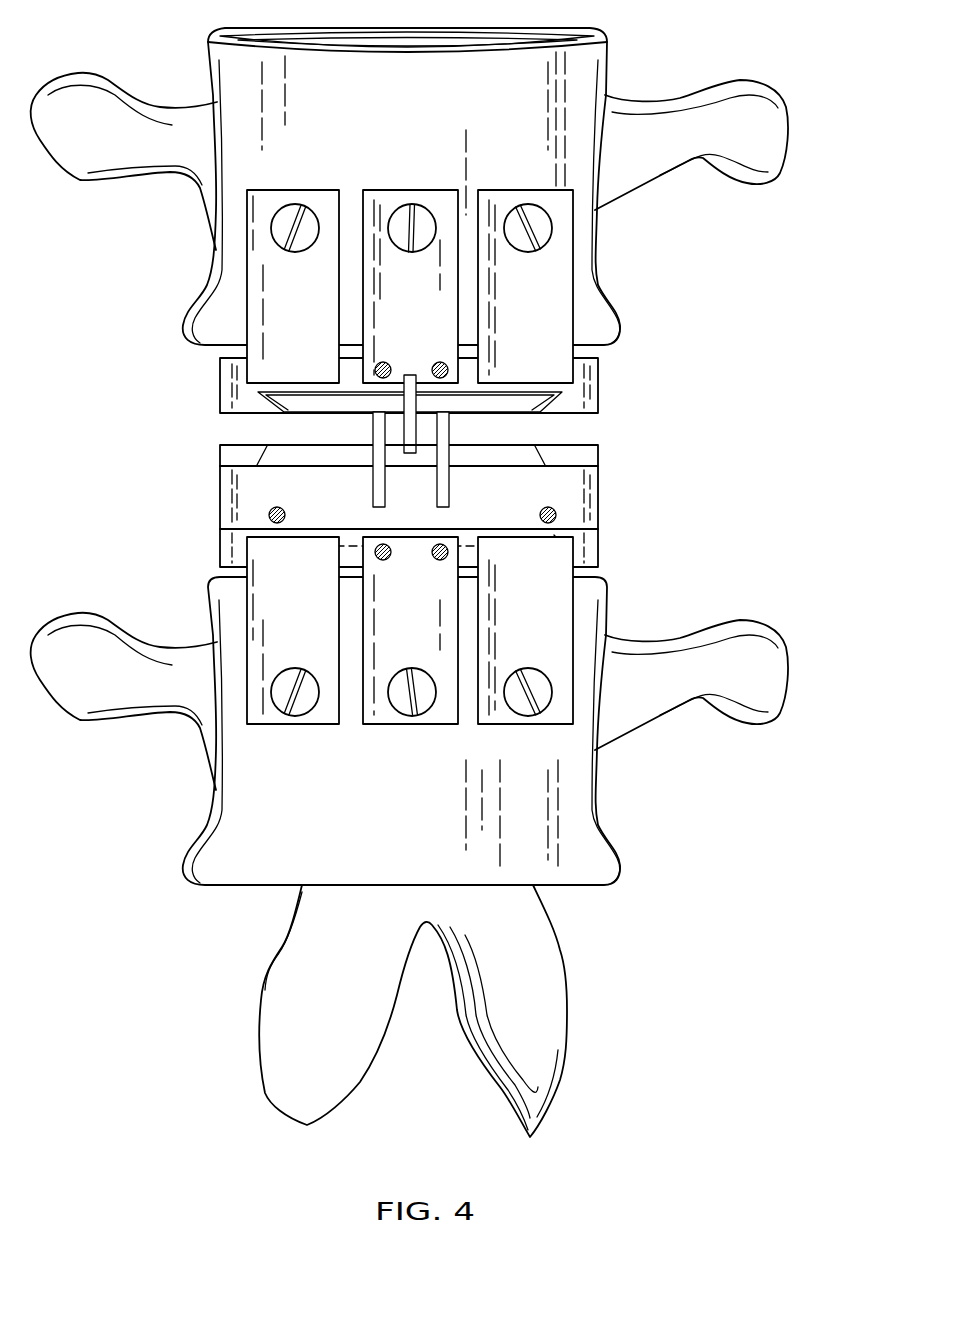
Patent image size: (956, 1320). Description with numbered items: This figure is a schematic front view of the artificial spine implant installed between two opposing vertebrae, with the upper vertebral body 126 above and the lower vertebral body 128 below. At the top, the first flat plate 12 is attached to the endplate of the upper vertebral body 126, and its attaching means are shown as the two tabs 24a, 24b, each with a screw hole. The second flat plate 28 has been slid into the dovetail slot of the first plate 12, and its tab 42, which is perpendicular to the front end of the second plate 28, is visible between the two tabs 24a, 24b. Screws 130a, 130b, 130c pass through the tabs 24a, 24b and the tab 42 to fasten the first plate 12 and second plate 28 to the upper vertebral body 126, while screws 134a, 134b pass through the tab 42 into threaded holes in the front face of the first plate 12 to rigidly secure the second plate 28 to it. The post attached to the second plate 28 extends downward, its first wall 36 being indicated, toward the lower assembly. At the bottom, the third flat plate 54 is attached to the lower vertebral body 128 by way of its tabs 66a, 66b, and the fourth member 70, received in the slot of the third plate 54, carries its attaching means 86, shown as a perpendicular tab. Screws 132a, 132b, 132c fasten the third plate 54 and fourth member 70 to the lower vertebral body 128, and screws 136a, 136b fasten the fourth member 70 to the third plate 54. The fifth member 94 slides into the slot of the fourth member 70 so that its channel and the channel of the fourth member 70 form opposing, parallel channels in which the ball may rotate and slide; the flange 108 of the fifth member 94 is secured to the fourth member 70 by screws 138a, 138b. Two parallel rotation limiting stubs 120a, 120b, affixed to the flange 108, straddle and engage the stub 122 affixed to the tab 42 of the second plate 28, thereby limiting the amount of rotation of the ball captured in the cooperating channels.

The first flat plate 12 is at (369, 390).
The tab 24a is at (555, 310).
The tab 24b is at (317, 310).
The second flat plate 28 is at (318, 398).
The first wall 36 is at (399, 472).
The tab 42 is at (427, 312).
The third flat plate 54 is at (217, 550).
The tab 66a is at (555, 608).
The tab 66b is at (317, 608).
The fourth member 70 is at (384, 459).
The means for attaching fourth member 86 is at (422, 659).
The fifth member 94 is at (515, 460).
The flange 108 is at (588, 485).
The rotation limiting stub 120a is at (478, 500).
The rotation limiting stub 120b is at (372, 493).
The stub 122 is at (418, 377).
The upper vertebral body 126 is at (438, 120).
The lower vertebral body 128 is at (442, 836).
The screw 130a is at (308, 212).
The screw 130b is at (418, 213).
The screw 130c is at (533, 213).
The screw 132a is at (298, 712).
The screw 132b is at (407, 712).
The screw 132c is at (538, 708).
The screw 134a is at (374, 370).
The screw 134b is at (449, 372).
The screw 136a is at (400, 570).
The screw 136b is at (444, 560).
The screw 138a is at (269, 514).
The screw 138b is at (557, 514).